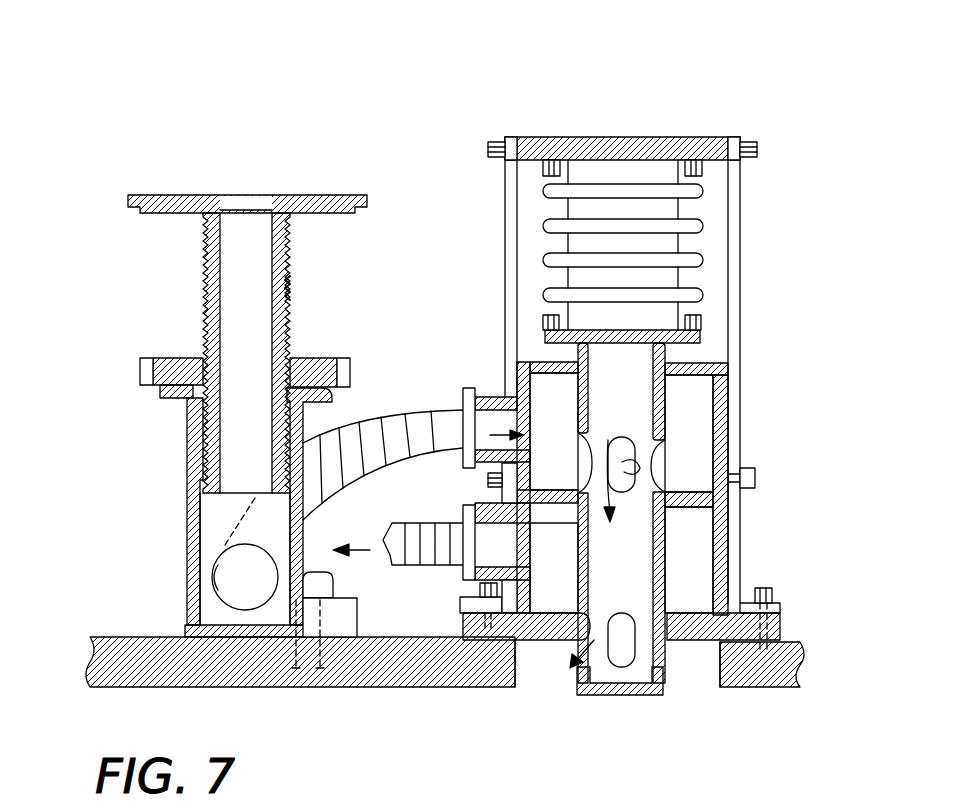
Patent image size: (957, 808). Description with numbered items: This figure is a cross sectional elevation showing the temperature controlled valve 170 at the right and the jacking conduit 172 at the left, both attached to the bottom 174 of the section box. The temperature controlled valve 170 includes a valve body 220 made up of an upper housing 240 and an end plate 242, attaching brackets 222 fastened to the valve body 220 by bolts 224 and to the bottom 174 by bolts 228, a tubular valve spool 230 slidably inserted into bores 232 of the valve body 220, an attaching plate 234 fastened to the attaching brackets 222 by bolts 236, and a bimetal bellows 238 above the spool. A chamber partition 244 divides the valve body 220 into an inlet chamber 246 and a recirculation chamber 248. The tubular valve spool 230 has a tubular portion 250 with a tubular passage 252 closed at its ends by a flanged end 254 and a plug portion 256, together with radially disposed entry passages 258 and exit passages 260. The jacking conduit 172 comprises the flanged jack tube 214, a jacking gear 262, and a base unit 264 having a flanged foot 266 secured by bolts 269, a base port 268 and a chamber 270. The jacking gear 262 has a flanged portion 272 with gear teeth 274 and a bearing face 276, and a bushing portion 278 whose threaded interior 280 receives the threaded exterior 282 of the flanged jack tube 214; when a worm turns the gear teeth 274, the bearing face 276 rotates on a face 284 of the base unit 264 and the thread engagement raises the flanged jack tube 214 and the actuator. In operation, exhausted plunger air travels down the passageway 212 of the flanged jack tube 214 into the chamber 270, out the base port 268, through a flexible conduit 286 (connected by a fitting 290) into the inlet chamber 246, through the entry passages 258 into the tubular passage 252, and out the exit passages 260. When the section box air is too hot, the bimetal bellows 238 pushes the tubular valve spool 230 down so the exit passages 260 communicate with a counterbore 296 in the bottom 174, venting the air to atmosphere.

The temperature controlled valve 170 is at (512, 109).
The jacking conduit 172 is at (303, 127).
The bottom 174 is at (393, 688).
The passageway 212 is at (290, 258).
The flanged jack tube 214 is at (305, 195).
The valve body 220 is at (735, 383).
The attaching brackets 222 is at (745, 180).
The bolts 224 is at (755, 485).
The bolts 228 is at (772, 595).
The tubular valve spool 230 is at (660, 412).
The bores 232 is at (700, 527).
The attaching plate 234 is at (712, 137).
The bolts 236 is at (832, 118).
The bimetal bellows 238 is at (560, 226).
The upper housing 240 is at (533, 360).
The end plate 242 is at (465, 625).
The chamber partition 244 is at (695, 520).
The inlet chamber 246 is at (575, 428).
The recirculation chamber 248 is at (575, 552).
The tubular portion 250 is at (700, 553).
The tubular passage 252 is at (710, 585).
The flanged end 254 is at (700, 337).
The plug portion 256 is at (605, 695).
The entry passages 258 is at (640, 470).
The exit passages 260 is at (630, 658).
The jacking gear 262 is at (307, 358).
The base unit 264 is at (183, 520).
The flanged foot 266 is at (465, 622).
The base port 268 is at (223, 588).
The bolts 269 is at (333, 573).
The chamber 270 is at (187, 545).
The flanged portion 272 is at (350, 368).
The gear teeth 274 is at (140, 380).
The bearing face 276 is at (157, 385).
The bushing portion 278 is at (183, 437).
The threaded interior 280 is at (282, 318).
The threaded exterior 282 is at (288, 280).
The face 284 is at (187, 405).
The flexible conduit 286 is at (437, 408).
The straight hose 290 is at (443, 523).
The counterbore 296 is at (547, 673).